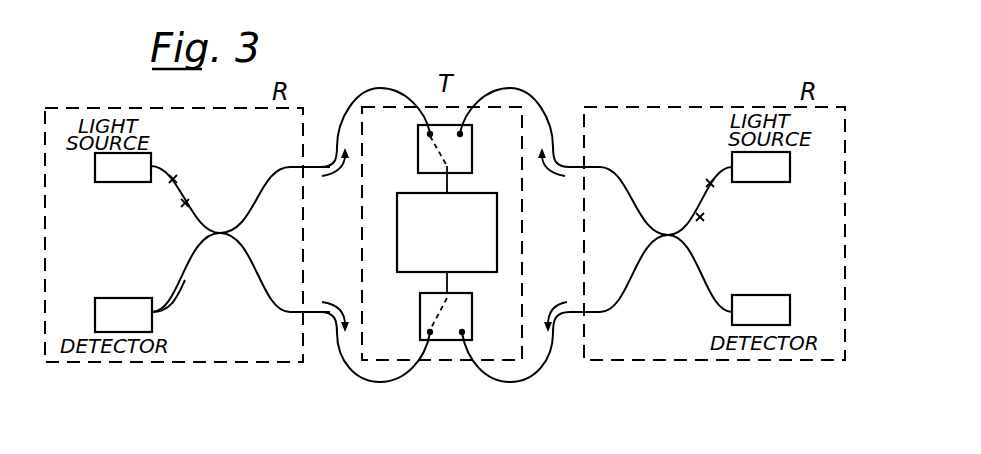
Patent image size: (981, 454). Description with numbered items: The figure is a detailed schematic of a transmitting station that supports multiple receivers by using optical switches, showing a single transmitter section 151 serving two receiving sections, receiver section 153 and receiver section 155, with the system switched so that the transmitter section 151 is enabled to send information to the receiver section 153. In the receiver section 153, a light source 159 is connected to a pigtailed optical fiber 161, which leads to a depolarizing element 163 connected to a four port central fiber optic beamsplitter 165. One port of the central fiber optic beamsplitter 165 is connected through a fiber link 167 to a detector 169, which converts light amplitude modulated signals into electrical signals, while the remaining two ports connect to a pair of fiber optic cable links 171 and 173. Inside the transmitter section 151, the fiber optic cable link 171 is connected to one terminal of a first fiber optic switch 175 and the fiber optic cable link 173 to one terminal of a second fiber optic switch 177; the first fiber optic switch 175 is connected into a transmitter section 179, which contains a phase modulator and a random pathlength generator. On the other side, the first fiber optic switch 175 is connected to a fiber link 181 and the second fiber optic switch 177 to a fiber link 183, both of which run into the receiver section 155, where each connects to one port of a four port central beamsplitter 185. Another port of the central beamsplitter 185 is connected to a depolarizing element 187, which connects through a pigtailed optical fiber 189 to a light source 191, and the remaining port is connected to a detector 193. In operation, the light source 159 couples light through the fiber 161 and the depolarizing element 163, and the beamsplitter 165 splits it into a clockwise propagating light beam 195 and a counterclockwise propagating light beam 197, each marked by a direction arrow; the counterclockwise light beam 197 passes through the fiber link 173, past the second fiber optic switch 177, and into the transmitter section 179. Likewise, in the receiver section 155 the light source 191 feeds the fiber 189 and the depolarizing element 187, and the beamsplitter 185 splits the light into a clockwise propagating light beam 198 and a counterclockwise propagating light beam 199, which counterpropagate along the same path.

The transmitter section 151 is at (447, 104).
The receiver section 153 is at (150, 106).
The receiver section 155 is at (680, 104).
The light source 159 is at (123, 167).
The pigtailed optical fiber 161 is at (166, 168).
The depolarizing element 163 is at (180, 192).
The central fiber optic beamsplitter 165 is at (220, 232).
The fiber link 167 is at (181, 288).
The detector 169 is at (123, 315).
The fiber optic cable link 171 is at (357, 99).
The fiber optic cable link 173 is at (337, 358).
The first fiber optic switch 175 is at (418, 133).
The second fiber optic switch 177 is at (420, 338).
The transmitter section 179 is at (397, 230).
The fiber link 181 is at (538, 99).
The fiber link 183 is at (512, 383).
The central fiber optic beamsplitter 185 is at (668, 233).
The depolarizing element 187 is at (708, 200).
The pigtailed optical fiber 189 is at (717, 164).
The light source 191 is at (761, 167).
The detector 193 is at (761, 310).
The clockwise propagating light beam 195 is at (336, 184).
The counterclockwise propagating light beam 197 is at (336, 293).
The clockwise propagating light beam 198 is at (559, 301).
The counterclockwise propagating light beam 199 is at (558, 181).